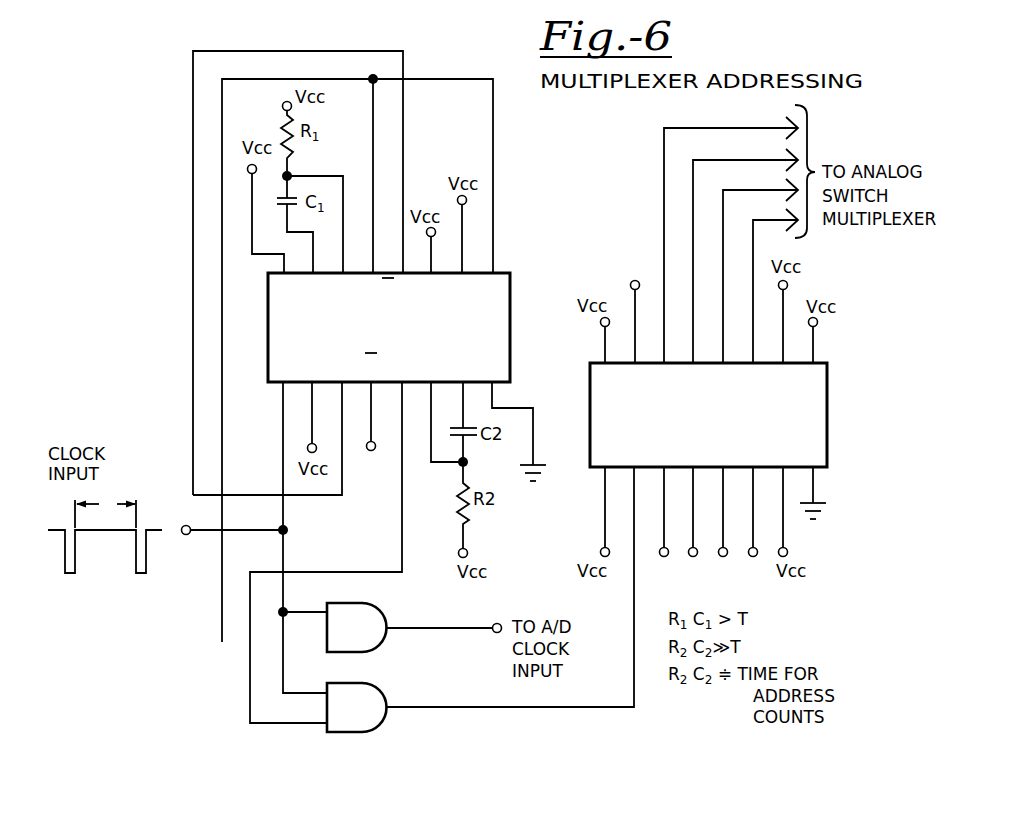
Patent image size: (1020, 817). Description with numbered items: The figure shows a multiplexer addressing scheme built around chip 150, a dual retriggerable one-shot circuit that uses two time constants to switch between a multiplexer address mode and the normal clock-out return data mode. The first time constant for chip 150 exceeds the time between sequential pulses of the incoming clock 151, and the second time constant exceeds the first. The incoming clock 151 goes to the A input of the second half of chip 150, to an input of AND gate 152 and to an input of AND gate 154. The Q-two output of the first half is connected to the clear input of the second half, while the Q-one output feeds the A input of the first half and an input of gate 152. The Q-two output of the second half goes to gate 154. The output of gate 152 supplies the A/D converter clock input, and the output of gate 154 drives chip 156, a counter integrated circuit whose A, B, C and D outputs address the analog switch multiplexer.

The dual retriggerable one-shot circuit 150 is at (510, 302).
The incoming clock 151 is at (69, 573).
The AND gate 152 is at (377, 603).
The AND gate 154 is at (370, 683).
The counter chip 156 is at (827, 412).